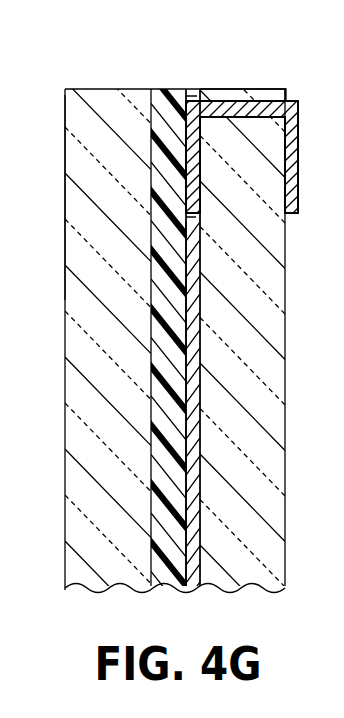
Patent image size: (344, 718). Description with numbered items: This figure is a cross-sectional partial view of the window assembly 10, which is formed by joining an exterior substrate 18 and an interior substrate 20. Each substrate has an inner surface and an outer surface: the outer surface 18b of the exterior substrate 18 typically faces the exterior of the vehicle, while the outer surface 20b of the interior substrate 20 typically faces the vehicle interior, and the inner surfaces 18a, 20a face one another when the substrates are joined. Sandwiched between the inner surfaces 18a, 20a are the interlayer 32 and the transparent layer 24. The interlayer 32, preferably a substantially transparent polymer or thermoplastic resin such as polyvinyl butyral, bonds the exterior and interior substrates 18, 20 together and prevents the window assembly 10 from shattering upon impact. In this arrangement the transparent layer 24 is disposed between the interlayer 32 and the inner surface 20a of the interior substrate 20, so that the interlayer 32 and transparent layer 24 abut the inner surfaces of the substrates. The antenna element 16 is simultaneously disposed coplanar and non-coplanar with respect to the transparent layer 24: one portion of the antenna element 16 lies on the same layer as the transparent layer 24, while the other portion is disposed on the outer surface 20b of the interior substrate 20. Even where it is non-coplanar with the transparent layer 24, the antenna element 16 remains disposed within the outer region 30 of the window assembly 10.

The window assembly 10 is at (88, 68).
The antenna element 16 is at (298, 147).
The exterior substrate 18 is at (75, 462).
The inner surface of exterior substrate 18a is at (152, 89).
The outer surface of exterior substrate 18b is at (65, 97).
The interior substrate 20 is at (267, 440).
The inner surface of interior substrate 20a is at (192, 95).
The outer surface of interior substrate 20b is at (287, 97).
The transparent layer 24 is at (192, 362).
The outer region 30 is at (185, 97).
The interlayer 32 is at (157, 325).